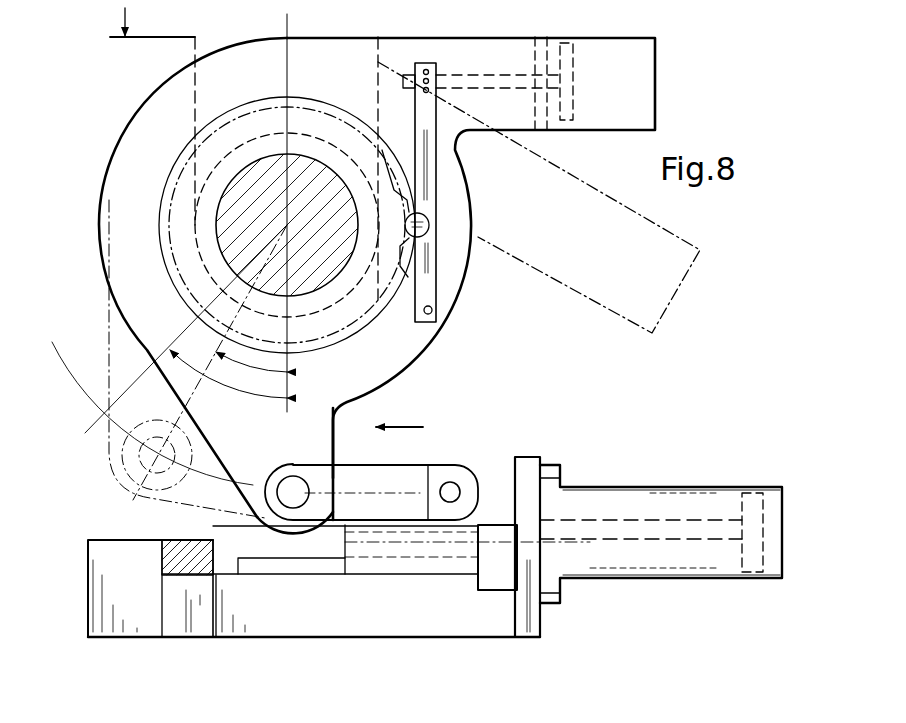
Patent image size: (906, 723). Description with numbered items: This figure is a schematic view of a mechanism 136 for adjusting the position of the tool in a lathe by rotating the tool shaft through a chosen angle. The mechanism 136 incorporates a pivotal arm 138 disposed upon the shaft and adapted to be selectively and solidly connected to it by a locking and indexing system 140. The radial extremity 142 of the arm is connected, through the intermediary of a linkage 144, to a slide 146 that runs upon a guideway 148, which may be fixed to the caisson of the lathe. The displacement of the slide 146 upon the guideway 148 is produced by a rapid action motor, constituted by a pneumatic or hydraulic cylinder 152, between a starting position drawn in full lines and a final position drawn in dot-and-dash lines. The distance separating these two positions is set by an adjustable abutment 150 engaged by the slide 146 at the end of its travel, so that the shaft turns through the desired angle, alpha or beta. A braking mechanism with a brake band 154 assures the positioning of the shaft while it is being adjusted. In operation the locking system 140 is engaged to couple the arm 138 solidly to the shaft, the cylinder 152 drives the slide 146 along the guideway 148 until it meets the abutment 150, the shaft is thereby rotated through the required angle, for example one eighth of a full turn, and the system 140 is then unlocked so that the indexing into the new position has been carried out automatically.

The mechanism for changing the tool 136 is at (128, 490).
The pivotal arm 138 is at (402, 343).
The locking and indexing system 140 is at (452, 200).
The radial extremity 142 is at (323, 443).
The linkage 144 is at (445, 470).
The slide 146 is at (400, 570).
The guideway 148 is at (296, 570).
The abutment 150 is at (168, 563).
The hydraulic cylinder 152 is at (670, 570).
The brake band 154 is at (188, 42).